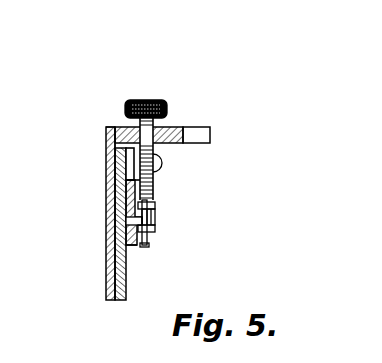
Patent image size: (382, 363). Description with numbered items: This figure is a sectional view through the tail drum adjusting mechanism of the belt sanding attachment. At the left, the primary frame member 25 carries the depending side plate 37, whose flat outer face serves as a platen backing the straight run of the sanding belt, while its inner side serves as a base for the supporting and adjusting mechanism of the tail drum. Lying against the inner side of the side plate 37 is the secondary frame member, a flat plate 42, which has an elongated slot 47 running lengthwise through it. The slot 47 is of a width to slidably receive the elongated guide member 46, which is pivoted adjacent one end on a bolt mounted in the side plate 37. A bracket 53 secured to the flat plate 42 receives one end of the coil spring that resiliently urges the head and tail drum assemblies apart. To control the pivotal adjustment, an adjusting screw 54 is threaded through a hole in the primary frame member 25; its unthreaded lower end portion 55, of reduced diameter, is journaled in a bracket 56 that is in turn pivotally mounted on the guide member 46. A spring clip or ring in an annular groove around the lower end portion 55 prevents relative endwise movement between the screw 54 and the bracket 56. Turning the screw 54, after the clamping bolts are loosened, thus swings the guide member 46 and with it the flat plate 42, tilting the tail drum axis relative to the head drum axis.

The primary frame member 25 is at (175, 128).
The side plate 37 is at (107, 157).
The flat plate 42 is at (120, 184).
The guide member 46 is at (118, 238).
The elongated slot 47 is at (119, 248).
The bracket 53 is at (163, 162).
The adjusting screw 54 is at (158, 100).
The unthreaded lower end portion 55 is at (157, 222).
The bracket 56 is at (132, 247).